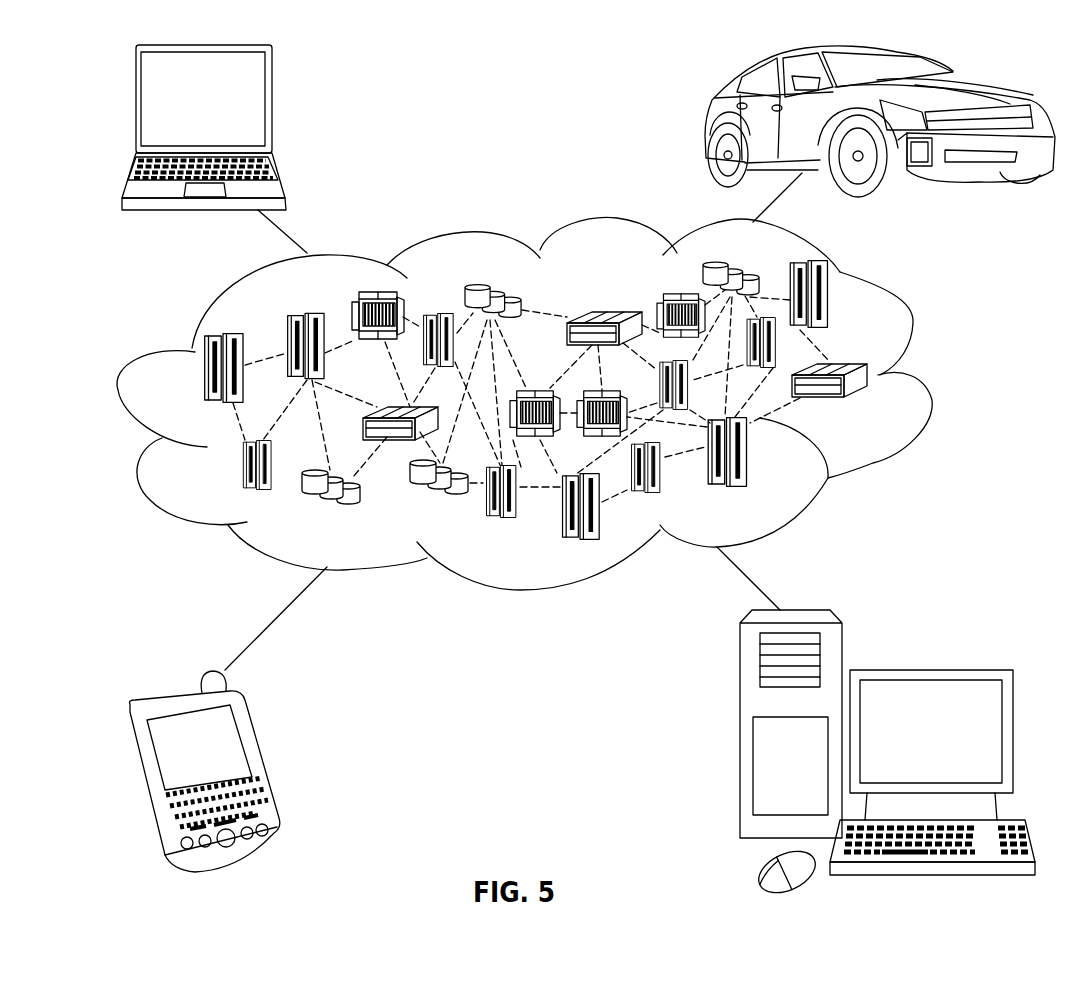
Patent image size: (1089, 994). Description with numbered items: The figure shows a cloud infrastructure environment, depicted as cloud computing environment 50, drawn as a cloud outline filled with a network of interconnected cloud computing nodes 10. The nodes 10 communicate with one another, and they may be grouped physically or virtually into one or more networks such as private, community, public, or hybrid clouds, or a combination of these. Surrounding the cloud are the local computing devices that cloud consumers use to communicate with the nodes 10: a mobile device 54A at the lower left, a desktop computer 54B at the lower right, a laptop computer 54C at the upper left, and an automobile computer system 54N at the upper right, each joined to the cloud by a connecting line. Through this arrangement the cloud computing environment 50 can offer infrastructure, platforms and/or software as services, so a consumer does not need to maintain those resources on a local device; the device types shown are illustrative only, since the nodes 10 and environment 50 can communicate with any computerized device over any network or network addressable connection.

The cloud computing nodes 10 is at (883, 410).
The cloud computing environment 50 is at (931, 379).
The mobile device 54A is at (262, 760).
The desktop computer 54B is at (928, 668).
The laptop computer 54C is at (272, 107).
The automobile computer system 54N is at (712, 121).